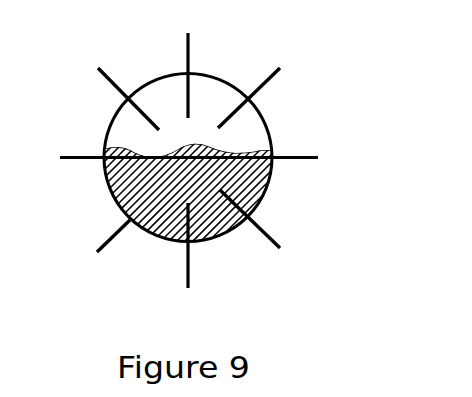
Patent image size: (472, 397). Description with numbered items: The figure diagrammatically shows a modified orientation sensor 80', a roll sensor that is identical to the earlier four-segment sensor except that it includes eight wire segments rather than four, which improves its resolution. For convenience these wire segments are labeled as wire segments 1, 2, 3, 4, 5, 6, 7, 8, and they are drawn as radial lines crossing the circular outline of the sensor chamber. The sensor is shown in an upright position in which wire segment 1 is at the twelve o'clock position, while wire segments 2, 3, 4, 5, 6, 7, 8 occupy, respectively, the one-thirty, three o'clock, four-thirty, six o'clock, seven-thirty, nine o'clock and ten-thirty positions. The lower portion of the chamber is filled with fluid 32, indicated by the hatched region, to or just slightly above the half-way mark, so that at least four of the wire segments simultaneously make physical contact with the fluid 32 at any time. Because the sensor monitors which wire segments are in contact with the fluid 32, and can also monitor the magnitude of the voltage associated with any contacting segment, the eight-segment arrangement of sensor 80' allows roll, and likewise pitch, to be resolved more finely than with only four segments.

The wire segment 1 is at (183, 46).
The wire segment 2 is at (267, 75).
The wire segment 3 is at (297, 163).
The wire segment 4 is at (278, 237).
The wire segment 5 is at (190, 273).
The wire segment 6 is at (107, 245).
The wire segment 7 is at (70, 163).
The wire segment 8 is at (103, 80).
The fluid 32 is at (117, 183).
The modified orientation sensor 80' is at (247, 136).